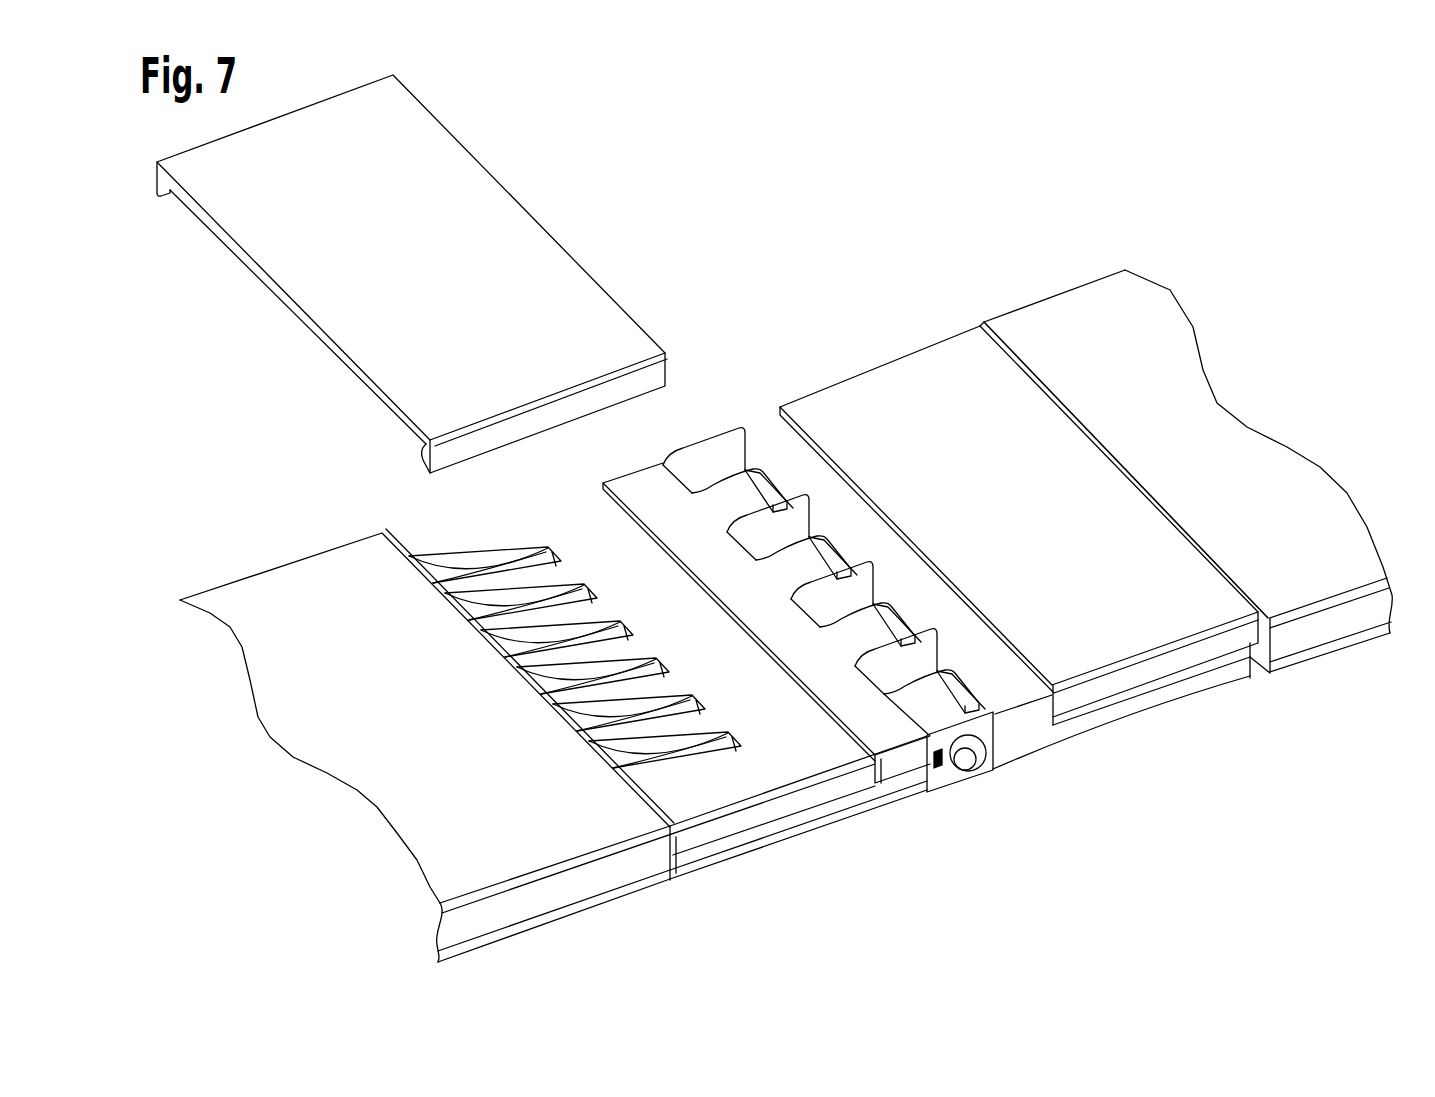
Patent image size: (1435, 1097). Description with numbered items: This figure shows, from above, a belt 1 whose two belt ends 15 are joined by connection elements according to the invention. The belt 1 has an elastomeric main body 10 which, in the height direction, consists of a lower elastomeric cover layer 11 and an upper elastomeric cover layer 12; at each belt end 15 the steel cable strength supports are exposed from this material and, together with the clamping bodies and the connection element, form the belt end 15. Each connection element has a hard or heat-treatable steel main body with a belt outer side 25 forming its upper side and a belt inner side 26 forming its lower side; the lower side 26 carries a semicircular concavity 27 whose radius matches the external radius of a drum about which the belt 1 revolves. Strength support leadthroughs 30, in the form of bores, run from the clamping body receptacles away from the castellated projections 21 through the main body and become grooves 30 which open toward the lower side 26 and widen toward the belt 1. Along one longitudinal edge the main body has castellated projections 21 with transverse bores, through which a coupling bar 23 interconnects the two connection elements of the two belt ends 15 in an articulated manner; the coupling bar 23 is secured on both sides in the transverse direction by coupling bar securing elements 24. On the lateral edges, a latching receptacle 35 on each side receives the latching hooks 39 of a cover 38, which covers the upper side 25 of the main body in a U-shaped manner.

The belt 1 is at (227, 518).
The elastomeric main body 10 is at (618, 878).
The lower elastomeric cover layer 11 is at (592, 912).
The upper elastomeric cover layer 12 is at (631, 847).
The belt end 15 is at (369, 530).
The castellated projections 21 is at (788, 533).
The coupling bar 23 is at (972, 770).
The coupling bar securing elements 24 is at (952, 780).
The belt outer side 25 is at (593, 503).
The belt inner side 26 is at (694, 882).
The concavity 27 is at (800, 831).
The strength support leadthroughs 30 is at (530, 605).
The latching receptacle 35 is at (820, 790).
The cover 38 is at (490, 217).
The latching hooks 39 is at (178, 197).